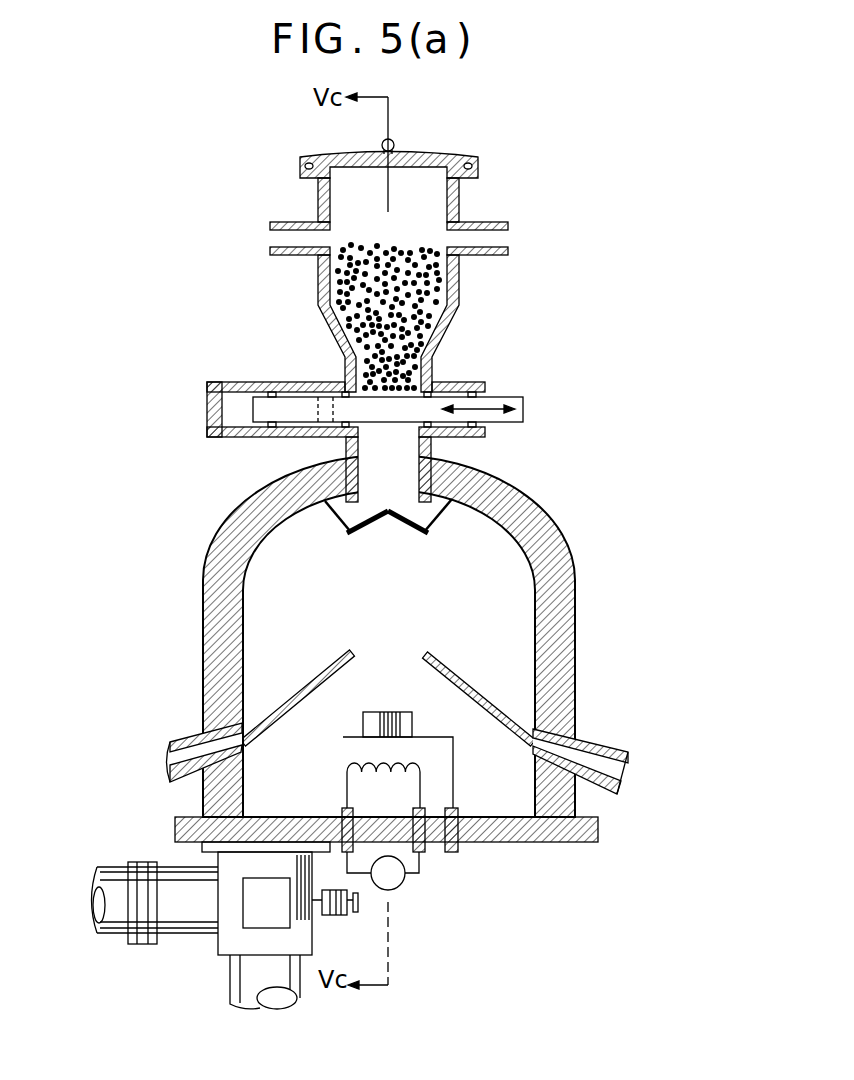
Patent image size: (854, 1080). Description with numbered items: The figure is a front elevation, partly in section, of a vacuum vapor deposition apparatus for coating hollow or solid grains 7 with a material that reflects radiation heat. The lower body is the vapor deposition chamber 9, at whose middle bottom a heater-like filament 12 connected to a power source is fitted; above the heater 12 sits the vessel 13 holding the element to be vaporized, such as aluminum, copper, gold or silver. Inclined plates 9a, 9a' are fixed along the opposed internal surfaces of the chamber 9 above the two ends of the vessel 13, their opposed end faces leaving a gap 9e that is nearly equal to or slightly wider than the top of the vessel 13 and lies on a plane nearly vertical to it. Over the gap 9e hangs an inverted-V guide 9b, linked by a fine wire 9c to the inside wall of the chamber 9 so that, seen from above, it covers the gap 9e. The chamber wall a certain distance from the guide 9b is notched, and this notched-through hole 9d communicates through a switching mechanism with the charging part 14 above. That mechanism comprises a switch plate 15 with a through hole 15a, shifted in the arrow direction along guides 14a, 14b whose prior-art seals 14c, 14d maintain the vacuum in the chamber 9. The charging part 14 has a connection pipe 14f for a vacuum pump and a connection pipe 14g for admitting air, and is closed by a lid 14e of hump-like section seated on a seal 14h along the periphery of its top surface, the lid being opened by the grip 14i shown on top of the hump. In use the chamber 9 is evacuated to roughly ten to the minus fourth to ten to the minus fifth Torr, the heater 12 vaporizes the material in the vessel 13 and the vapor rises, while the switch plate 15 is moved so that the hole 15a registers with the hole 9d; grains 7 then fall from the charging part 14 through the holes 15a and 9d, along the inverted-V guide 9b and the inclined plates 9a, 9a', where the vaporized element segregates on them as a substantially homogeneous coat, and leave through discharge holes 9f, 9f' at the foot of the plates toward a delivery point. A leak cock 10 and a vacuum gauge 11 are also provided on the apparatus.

The grains 7 is at (446, 281).
The vapor deposition chamber 9 is at (572, 581).
The inclined plate 9a is at (479, 692).
The inclined plate 9a' is at (298, 692).
The inverted-V guide 9b is at (357, 534).
The fine wire 9c is at (445, 519).
The notched-through portion 9d is at (398, 468).
The gap 9e is at (386, 662).
The discharge hole 9f is at (602, 761).
The discharge hole 9f' is at (177, 752).
The leak cock 10 is at (334, 916).
The vacuum gauge 11 is at (257, 921).
The heater-like filament 12 is at (367, 762).
The vessel 13 is at (399, 712).
The charging part 14 is at (464, 303).
The guide 14a is at (218, 381).
The guide 14b is at (457, 382).
The seal 14c is at (272, 391).
The seal 14d is at (476, 392).
The lid 14e is at (432, 153).
The connection pipe 14f is at (485, 223).
The connection pipe 14g is at (288, 222).
The seal 14h is at (466, 163).
The lid handle 14i is at (382, 142).
The switch plate 15 is at (524, 403).
The through hole 15a is at (318, 405).